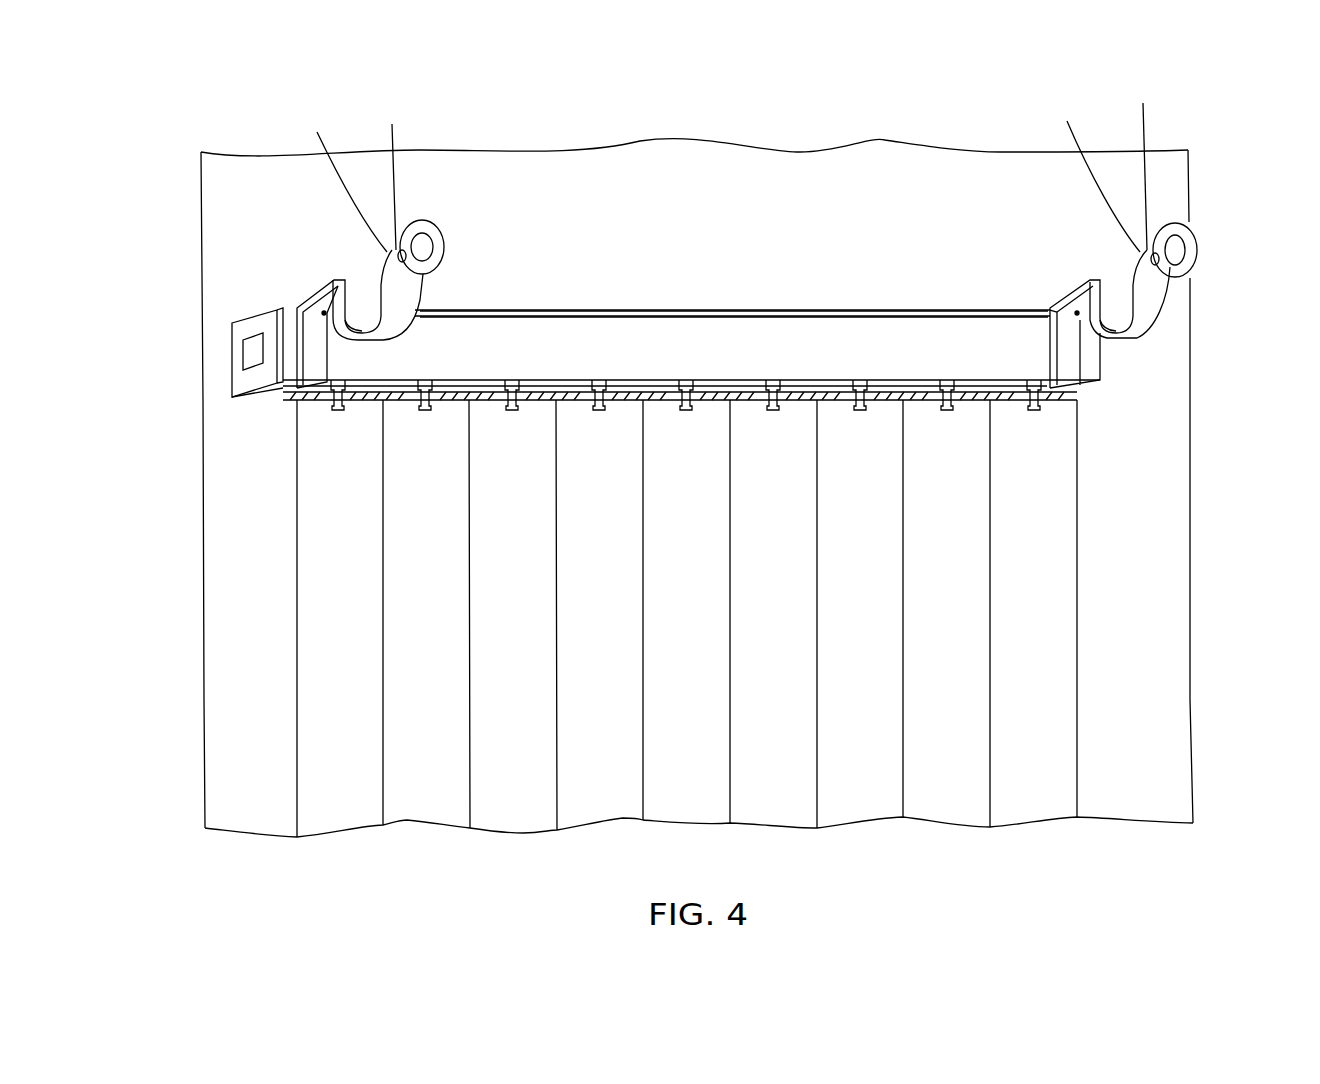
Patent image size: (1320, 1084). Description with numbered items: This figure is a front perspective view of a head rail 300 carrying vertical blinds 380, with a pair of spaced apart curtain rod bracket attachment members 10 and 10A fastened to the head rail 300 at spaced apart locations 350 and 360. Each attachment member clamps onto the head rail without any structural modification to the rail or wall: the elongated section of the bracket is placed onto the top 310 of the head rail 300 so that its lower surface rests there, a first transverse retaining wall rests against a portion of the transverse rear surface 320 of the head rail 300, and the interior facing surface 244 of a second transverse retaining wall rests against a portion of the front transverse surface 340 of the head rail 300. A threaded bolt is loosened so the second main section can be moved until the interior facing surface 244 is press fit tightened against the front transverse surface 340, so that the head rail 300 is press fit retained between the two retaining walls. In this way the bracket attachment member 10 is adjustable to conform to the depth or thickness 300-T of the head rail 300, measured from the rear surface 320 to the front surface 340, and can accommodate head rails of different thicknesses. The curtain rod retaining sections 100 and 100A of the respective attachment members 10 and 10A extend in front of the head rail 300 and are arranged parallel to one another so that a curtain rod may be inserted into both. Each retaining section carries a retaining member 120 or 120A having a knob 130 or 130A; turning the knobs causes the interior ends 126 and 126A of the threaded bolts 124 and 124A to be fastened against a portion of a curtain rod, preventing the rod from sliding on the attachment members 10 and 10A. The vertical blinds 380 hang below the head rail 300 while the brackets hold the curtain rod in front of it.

The curtain rod bracket attachment member 10 is at (334, 262).
The curtain rod bracket attachment member 10A is at (1058, 272).
The curtain rod retaining section 100 is at (382, 345).
The curtain rod retaining section 100A is at (1140, 352).
The retaining member 120 is at (443, 228).
The retaining member 120A is at (1200, 226).
The threaded bolt 124 is at (394, 171).
The threaded bolt 124A is at (1146, 159).
The interior end of threaded bolt 126 is at (342, 177).
The interior end of threaded bolt 126A is at (1086, 172).
The knob 130 is at (445, 253).
The knob 130A is at (1198, 255).
The interior facing surface of second transverse retaining wall 244 is at (295, 362).
The head rail 300 is at (632, 306).
The depth or thickness of head rail 300-T is at (289, 308).
The top of head rail 310 is at (817, 310).
The transverse rear surface of head rail 320 is at (232, 380).
The front transverse surface of head rail 340 is at (650, 357).
The spaced apart location 350 is at (233, 325).
The spaced apart location 360 is at (1046, 312).
The vertical blinds 380 is at (622, 571).